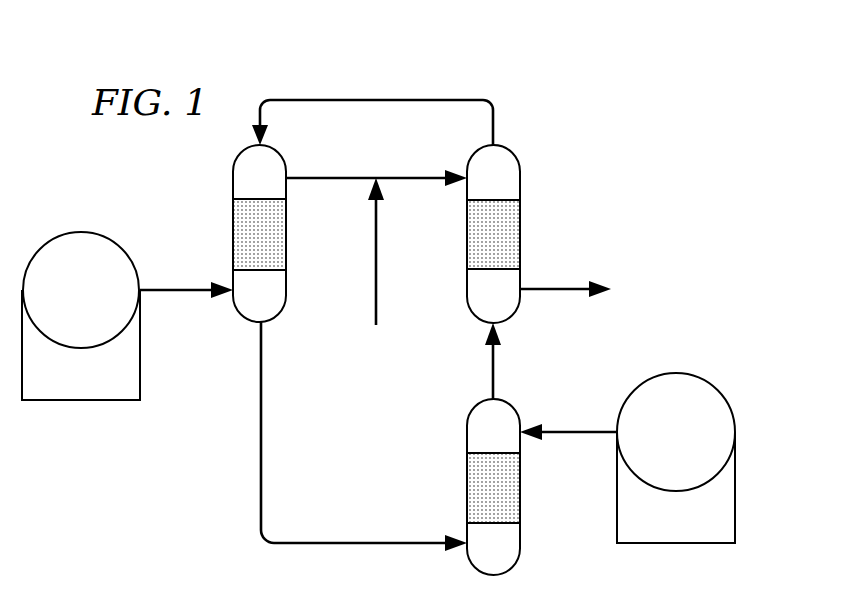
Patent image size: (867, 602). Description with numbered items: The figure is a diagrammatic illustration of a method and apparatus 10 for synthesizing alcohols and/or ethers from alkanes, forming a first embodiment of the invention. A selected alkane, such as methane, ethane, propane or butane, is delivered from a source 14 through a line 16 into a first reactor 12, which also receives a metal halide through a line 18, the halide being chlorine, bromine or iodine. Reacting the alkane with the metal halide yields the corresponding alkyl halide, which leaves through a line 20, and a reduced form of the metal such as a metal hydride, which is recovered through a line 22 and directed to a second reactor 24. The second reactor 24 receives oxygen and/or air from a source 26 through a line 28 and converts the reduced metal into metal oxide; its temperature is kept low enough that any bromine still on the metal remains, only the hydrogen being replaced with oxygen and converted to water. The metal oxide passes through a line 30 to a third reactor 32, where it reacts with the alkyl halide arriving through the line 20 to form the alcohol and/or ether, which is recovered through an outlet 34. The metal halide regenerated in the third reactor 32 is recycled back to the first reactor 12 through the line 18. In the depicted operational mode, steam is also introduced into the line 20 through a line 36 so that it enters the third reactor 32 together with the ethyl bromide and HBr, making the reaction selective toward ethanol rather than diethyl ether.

The method and apparatus 10 is at (336, 61).
The first reactor 12 is at (233, 190).
The source 14 is at (78, 232).
The line 16 is at (190, 292).
The line 18 is at (398, 100).
The line 20 is at (338, 177).
The line 22 is at (260, 425).
The second reactor 24 is at (522, 535).
The source 26 is at (686, 373).
The line 28 is at (572, 433).
The line 30 is at (492, 370).
The third reactor 32 is at (522, 190).
The outlet 34 is at (558, 288).
The line 36 is at (375, 262).